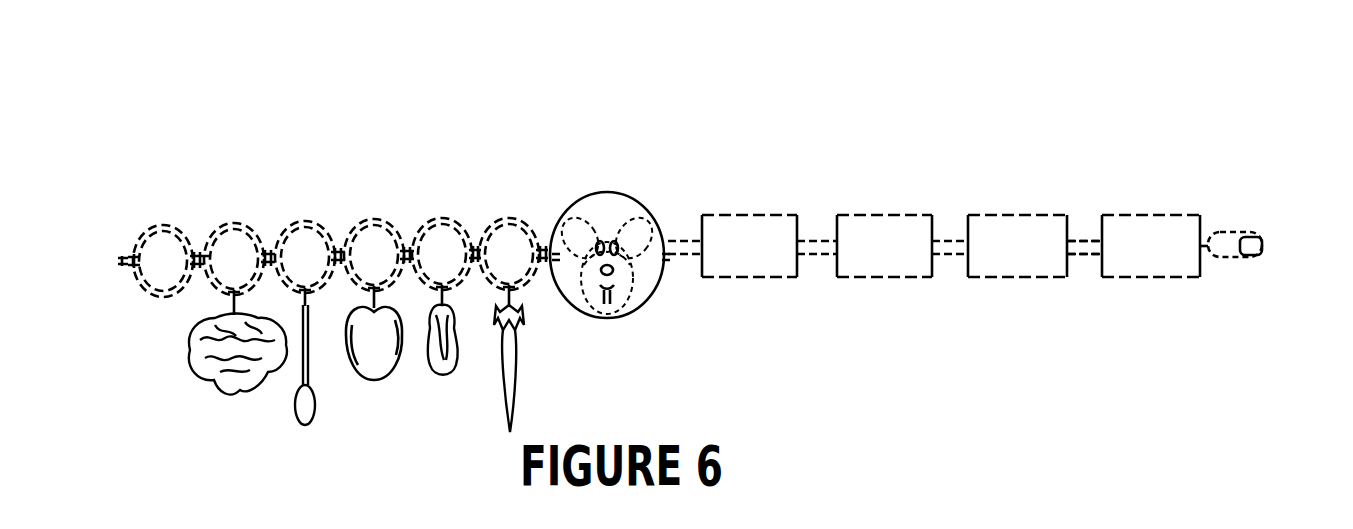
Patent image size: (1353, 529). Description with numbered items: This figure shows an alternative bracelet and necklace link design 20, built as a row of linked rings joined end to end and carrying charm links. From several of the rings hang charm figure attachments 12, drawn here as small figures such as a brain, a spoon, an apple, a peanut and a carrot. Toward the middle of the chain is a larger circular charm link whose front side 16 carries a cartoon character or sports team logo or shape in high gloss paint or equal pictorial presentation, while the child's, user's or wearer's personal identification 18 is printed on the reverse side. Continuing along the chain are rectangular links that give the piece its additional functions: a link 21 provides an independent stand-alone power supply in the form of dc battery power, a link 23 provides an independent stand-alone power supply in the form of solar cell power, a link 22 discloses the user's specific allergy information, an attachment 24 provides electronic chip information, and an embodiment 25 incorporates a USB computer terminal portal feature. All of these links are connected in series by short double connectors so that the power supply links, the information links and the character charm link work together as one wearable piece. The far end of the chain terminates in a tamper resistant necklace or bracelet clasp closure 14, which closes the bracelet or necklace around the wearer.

The charm figure attachment 12 is at (363, 380).
The clasp closure 14 is at (1248, 253).
The front side 16 is at (632, 198).
The personal identification 18 is at (749, 372).
The bracelet and necklace link design 20 is at (338, 183).
The dc battery power link 21 is at (862, 215).
The allergy information link 22 is at (1135, 215).
The solar cell power link 23 is at (116, 392).
The electronic chip information 24 is at (1048, 528).
The USB computer terminal portal embodiment 25 is at (992, 215).